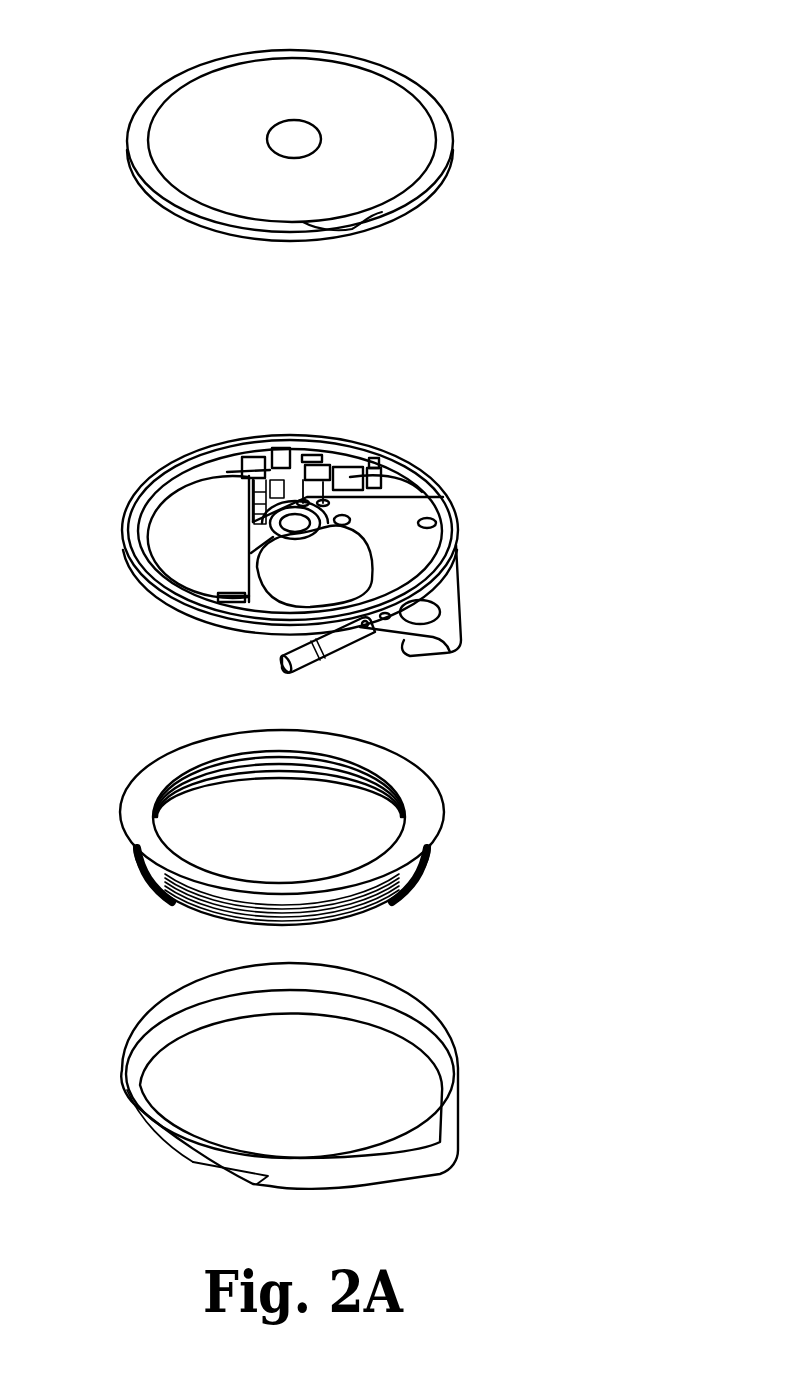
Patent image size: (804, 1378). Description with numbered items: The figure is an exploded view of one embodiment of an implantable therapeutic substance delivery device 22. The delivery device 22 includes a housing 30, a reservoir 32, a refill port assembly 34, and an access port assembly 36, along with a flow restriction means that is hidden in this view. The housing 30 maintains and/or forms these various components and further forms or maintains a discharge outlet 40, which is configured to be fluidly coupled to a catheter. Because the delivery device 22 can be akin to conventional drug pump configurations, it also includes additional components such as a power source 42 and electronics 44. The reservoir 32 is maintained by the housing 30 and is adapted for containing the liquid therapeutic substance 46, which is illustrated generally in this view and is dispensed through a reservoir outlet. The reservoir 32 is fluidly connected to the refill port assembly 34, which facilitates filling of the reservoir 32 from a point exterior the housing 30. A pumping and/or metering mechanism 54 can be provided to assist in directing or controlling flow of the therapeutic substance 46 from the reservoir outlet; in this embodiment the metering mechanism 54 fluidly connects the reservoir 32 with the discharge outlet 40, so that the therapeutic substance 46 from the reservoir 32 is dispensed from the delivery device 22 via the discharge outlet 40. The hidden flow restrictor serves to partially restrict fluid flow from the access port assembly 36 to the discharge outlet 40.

The delivery device 22 is at (528, 35).
The housing 30 is at (455, 157).
The reservoir 32 is at (324, 825).
The refill port assembly 34 is at (270, 519).
The access port assembly 36 is at (438, 608).
The discharge outlet 40 is at (297, 665).
The power source 42 is at (165, 532).
The electronics 44 is at (313, 457).
The therapeutic substance 46 is at (297, 810).
The metering mechanism 54 is at (300, 580).